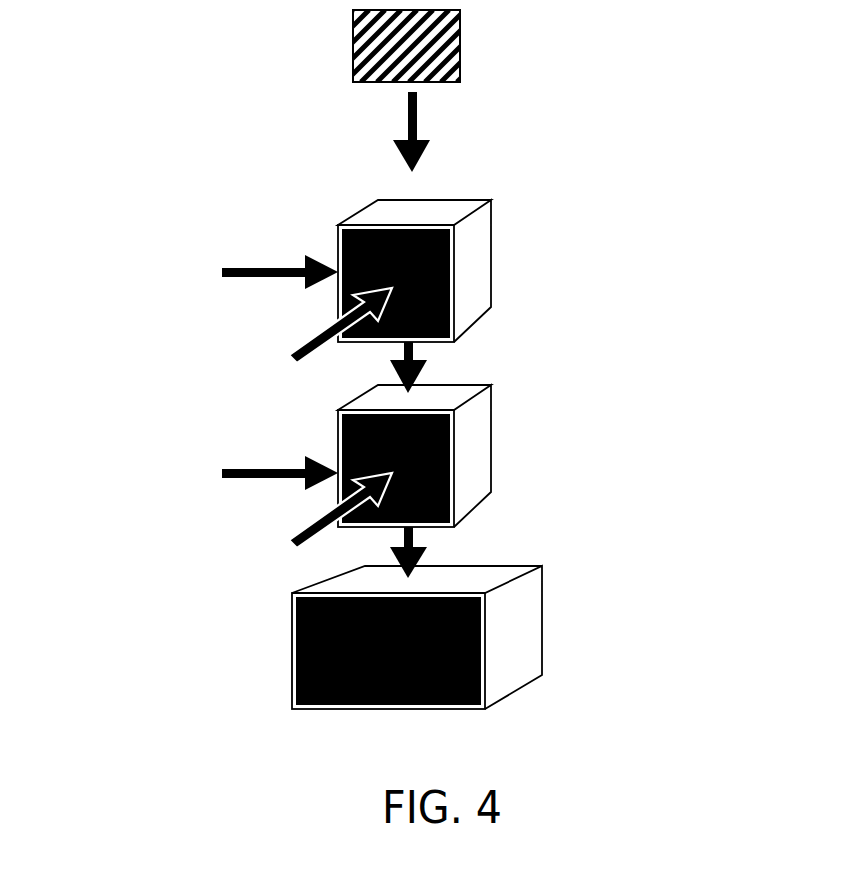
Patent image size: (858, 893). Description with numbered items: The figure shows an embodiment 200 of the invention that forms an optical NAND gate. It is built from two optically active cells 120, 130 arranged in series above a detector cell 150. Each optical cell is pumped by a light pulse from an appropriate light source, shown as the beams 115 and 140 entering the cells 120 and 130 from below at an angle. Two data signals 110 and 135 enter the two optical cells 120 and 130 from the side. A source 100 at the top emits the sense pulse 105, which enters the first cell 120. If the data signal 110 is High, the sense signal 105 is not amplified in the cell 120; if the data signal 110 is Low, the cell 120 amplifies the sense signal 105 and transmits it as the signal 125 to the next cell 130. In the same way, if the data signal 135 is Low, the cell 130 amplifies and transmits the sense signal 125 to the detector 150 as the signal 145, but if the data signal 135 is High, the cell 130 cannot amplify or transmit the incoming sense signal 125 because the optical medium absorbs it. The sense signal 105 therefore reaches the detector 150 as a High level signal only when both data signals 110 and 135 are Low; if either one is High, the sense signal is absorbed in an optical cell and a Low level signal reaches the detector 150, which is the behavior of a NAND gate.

The source 100 is at (448, 30).
The sense pulse 105 is at (405, 122).
The data signal 110 is at (248, 268).
The pump light beam 115 is at (305, 338).
The optically active cell 120 is at (468, 243).
The transmitted sense signal 125 is at (427, 363).
The optically active cell 130 is at (468, 459).
The data signal 135 is at (242, 468).
The pump light beam 140 is at (305, 528).
The transmitted sense signal 145 is at (428, 550).
The detector cell 150 is at (513, 638).
The optical NAND gate embodiment 200 is at (668, 108).